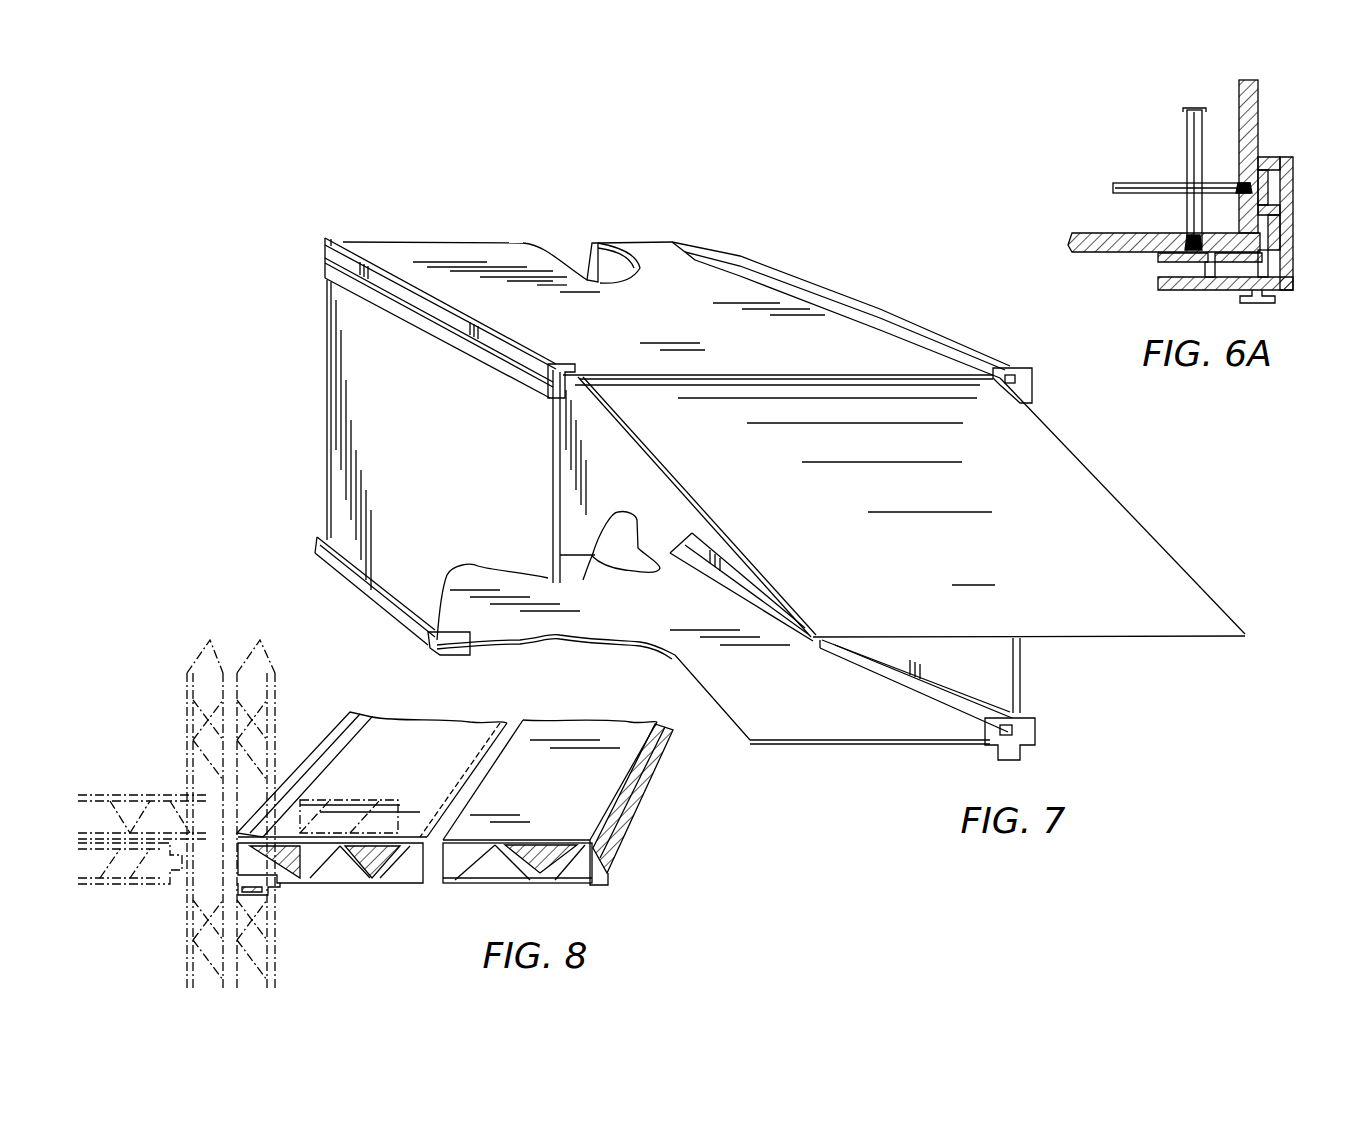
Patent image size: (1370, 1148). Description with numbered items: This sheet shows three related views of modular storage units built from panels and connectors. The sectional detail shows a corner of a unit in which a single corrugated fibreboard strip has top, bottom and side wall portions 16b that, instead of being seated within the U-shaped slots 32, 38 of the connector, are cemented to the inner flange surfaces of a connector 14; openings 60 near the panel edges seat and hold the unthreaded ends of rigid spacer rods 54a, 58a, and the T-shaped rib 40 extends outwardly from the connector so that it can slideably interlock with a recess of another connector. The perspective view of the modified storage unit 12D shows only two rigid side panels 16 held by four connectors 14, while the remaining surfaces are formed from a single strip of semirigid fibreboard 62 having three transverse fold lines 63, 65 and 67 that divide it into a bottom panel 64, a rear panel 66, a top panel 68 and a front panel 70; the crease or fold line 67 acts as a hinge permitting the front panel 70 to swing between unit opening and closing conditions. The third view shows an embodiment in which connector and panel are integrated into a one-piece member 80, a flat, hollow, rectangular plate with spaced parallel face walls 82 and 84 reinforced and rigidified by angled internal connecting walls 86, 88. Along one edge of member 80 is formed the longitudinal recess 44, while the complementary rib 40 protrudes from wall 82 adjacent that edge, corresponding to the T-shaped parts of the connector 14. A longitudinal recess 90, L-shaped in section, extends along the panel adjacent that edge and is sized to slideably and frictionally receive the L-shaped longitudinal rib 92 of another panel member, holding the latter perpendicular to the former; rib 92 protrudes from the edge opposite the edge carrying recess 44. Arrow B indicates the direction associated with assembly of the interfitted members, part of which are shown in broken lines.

In FIG. 7, the modified storage unit 12D is at (296, 501).
In FIG. 7, the connector 14 is at (320, 270).
In FIG. 6A, the connector 14 is at (1300, 273).
In FIG. 7, the panel 16 is at (426, 496).
In FIG. 6A, the wall portions 16b is at (1257, 95).
In FIG. 6A, the slot 32 is at (1278, 168).
In FIG. 6A, the slot 38 is at (1165, 268).
In FIG. 6A, the rib 40 is at (1262, 304).
In FIG. 8, the rib 40 is at (248, 830).
In FIG. 8, the space 44 is at (372, 800).
In FIG. 6A, the spacer rod 54a is at (1187, 140).
In FIG. 6A, the spacer rod 58a is at (1113, 185).
In FIG. 6A, the opening 60 is at (1248, 186).
In FIG. 7, the strip of semirigid fibreboard 62 is at (455, 235).
In FIG. 7, the fold line 63 is at (576, 563).
In FIG. 7, the bottom panel 64 is at (815, 714).
In FIG. 7, the fold line 65 is at (640, 246).
In FIG. 7, the rear panel 66 is at (590, 262).
In FIG. 7, the fold line 67 is at (865, 374).
In FIG. 7, the top panel 68 is at (666, 324).
In FIG. 7, the front panel 70 is at (1013, 558).
In FIG. 8, the one-piece member 80 is at (185, 723).
In FIG. 8, the face wall 82 is at (545, 783).
In FIG. 8, the face wall 84 is at (500, 883).
In FIG. 8, the internal connecting wall 86 is at (536, 845).
In FIG. 8, the internal connecting wall 88 is at (575, 872).
In FIG. 8, the longitudinal recess 90 is at (285, 890).
In FIG. 8, the longitudinal rib 92 is at (640, 805).
In FIG. 8, the direction B is at (718, 792).